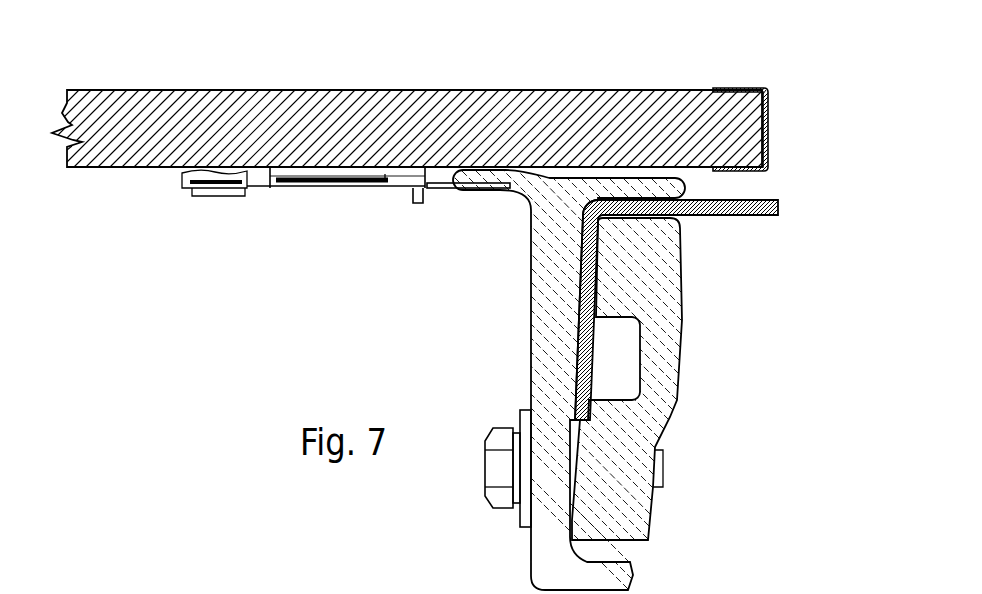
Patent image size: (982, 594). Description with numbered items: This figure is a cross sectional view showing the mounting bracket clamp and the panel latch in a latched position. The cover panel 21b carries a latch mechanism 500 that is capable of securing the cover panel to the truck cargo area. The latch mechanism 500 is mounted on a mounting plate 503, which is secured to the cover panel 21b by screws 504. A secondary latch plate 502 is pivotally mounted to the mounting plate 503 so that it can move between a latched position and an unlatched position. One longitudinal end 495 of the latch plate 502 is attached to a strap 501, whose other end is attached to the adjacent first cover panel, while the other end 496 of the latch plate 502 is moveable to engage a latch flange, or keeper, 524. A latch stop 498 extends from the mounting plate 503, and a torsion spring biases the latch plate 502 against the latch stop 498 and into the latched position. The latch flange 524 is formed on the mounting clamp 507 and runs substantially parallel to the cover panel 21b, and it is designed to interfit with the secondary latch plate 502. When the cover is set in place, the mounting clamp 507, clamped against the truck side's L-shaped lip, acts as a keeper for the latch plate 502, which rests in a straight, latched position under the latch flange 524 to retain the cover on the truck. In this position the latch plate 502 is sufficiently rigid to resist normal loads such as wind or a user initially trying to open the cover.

The cover panel 21b is at (377, 90).
The strap 501 is at (190, 176).
The longitudinal end of the latch plate 495 is at (180, 188).
The mounting plate 503 is at (270, 172).
The screws 504 is at (282, 178).
The latch mechanism 500 is at (330, 247).
The latch stop 498 is at (417, 193).
The secondary latch plate 502 is at (453, 190).
The other end of the latch plate 496 is at (500, 188).
The latch flange 524 is at (512, 181).
The mounting clamp 507 is at (637, 380).